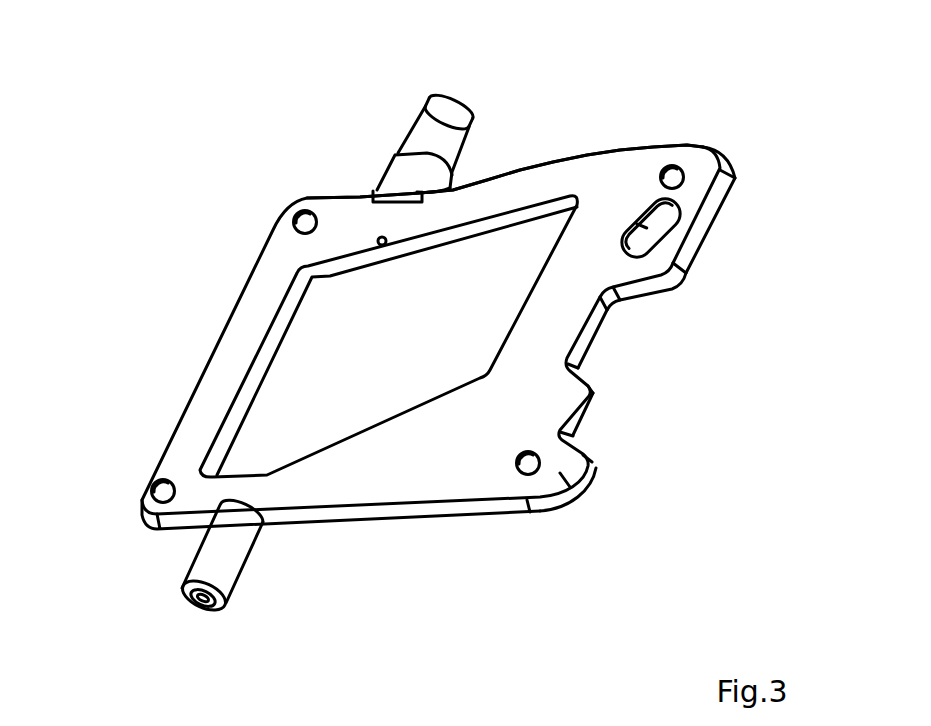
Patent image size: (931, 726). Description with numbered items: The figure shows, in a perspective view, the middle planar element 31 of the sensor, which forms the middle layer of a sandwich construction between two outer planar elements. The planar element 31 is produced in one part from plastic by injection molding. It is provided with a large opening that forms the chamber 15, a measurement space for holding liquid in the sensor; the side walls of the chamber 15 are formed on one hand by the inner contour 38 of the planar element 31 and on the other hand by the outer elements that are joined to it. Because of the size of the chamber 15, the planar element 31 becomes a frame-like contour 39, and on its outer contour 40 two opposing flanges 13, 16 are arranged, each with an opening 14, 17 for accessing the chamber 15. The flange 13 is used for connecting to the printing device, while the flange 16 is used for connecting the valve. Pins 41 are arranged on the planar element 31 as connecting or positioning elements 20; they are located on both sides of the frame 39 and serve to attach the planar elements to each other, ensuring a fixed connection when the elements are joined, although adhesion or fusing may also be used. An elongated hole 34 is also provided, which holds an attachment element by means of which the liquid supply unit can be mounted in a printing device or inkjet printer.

The flange 13 is at (237, 543).
The opening 14 is at (201, 606).
The chamber 15 is at (383, 342).
The flange 16 is at (423, 145).
The opening 17 is at (463, 93).
The connecting or positioning elements 20 is at (313, 197).
The middle planar element 31 is at (492, 423).
The elongated hole 34 is at (653, 232).
The inner contour 38 is at (302, 280).
The frame-like contour 39 is at (558, 178).
The outer contour 40 is at (343, 517).
The pins 41 is at (683, 180).